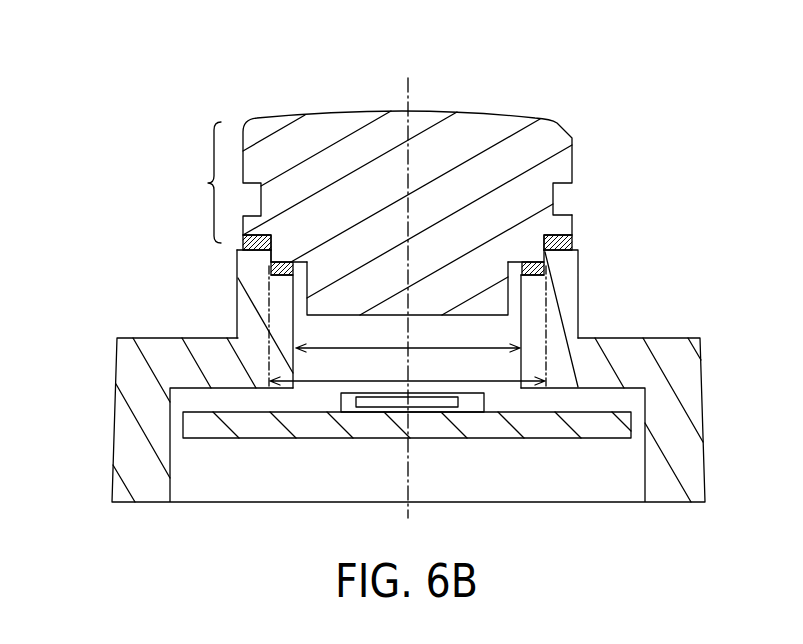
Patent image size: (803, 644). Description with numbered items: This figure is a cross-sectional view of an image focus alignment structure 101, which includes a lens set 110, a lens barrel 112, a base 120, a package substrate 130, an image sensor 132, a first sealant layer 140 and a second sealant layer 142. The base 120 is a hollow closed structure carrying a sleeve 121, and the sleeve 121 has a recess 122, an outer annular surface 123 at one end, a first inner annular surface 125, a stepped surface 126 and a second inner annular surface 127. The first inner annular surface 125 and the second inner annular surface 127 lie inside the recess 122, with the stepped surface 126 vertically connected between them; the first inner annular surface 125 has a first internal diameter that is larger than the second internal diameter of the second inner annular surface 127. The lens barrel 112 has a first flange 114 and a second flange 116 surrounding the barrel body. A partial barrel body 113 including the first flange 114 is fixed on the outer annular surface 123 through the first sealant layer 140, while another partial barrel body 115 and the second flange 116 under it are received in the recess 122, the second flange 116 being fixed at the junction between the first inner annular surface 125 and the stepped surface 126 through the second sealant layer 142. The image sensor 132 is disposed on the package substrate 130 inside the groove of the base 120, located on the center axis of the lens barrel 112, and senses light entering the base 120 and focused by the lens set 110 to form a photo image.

The image focus alignment structure 101 is at (64, 40).
The lens set 110 is at (453, 112).
The lens barrel 112 is at (600, 160).
The partial barrel body 113 is at (198, 182).
The first flange 114 is at (562, 231).
The partial barrel body 115 is at (340, 300).
The second flange 116 is at (530, 256).
The base 120 is at (670, 485).
The sleeve 121 is at (577, 302).
The recess 122 is at (493, 335).
The outer annular surface 123 is at (262, 256).
The first inner annular surface 125 is at (267, 270).
The stepped surface 126 is at (275, 289).
The second inner annular surface 127 is at (293, 313).
The package substrate 130 is at (485, 427).
The image sensor 132 is at (380, 400).
The first sealant layer 140 is at (568, 243).
The second sealant layer 142 is at (538, 272).